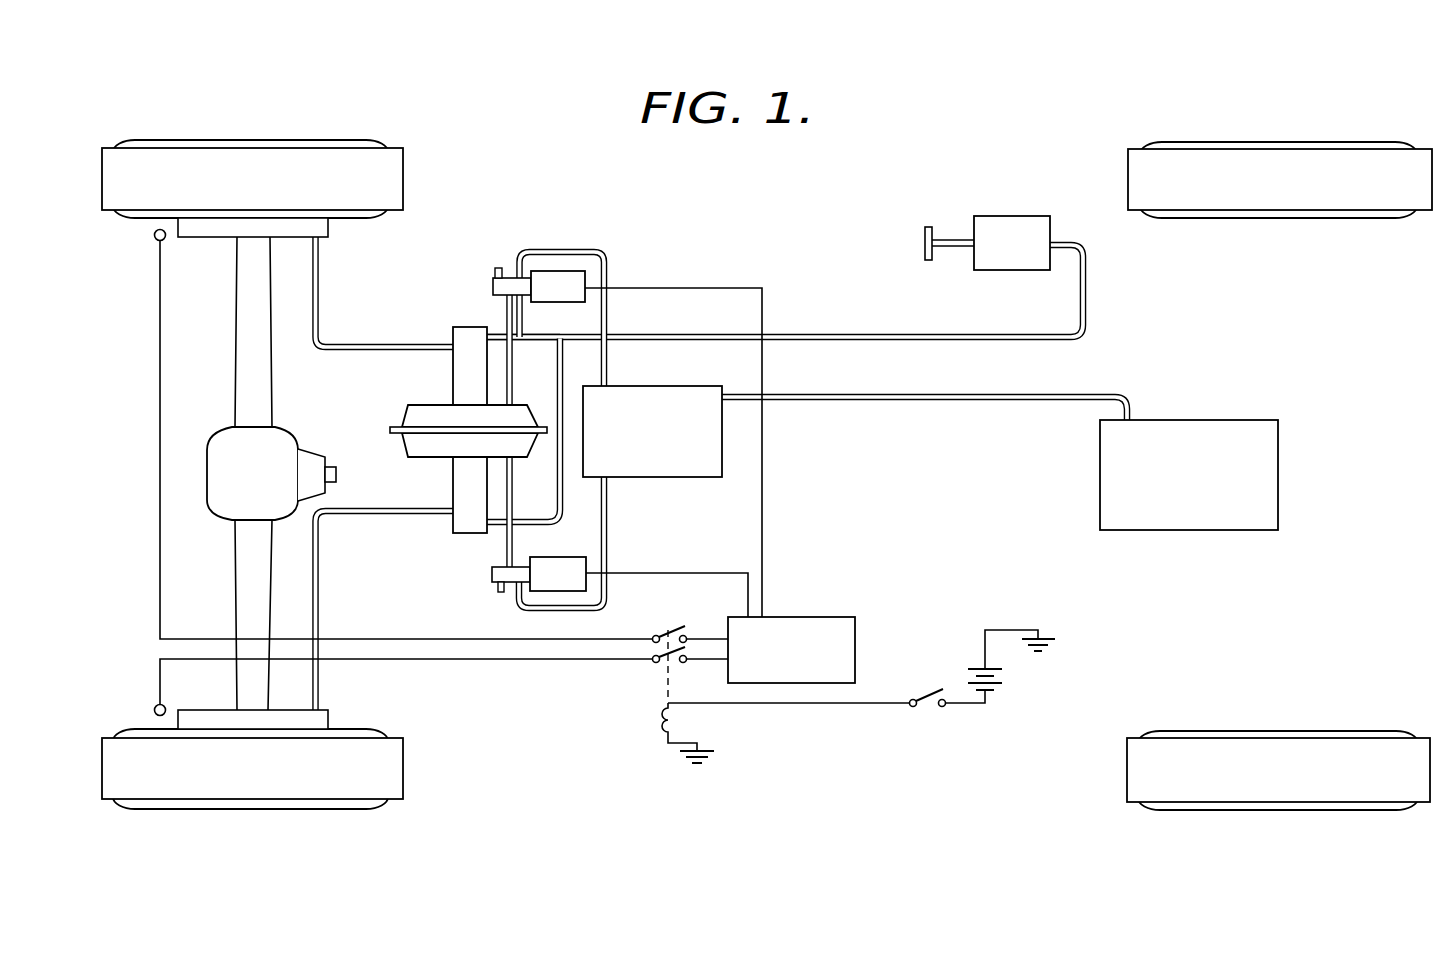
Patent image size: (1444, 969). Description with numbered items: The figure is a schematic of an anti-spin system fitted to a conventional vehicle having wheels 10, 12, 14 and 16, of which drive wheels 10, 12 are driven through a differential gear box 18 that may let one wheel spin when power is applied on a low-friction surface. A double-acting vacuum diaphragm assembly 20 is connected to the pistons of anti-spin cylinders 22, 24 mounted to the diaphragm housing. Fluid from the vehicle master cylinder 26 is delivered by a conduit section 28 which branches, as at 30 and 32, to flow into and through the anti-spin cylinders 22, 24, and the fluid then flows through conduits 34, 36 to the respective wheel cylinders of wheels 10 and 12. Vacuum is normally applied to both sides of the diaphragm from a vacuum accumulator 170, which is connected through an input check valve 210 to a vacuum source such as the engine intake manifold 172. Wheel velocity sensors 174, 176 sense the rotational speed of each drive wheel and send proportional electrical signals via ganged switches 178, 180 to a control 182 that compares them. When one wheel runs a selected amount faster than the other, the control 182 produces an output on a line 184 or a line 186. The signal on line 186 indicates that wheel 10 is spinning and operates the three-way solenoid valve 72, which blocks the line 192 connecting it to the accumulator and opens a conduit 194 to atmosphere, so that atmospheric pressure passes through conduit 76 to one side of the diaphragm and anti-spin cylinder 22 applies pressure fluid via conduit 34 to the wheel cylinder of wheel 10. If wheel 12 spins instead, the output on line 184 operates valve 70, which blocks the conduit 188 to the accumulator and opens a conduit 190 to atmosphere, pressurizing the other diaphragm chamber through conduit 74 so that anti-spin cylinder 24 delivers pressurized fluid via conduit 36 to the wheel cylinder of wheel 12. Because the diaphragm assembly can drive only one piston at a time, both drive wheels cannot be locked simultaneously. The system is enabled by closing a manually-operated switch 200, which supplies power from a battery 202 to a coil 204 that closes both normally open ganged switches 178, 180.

The drive wheel 10 is at (245, 150).
The drive wheel 12 is at (254, 798).
The wheel 14 is at (1220, 152).
The wheel 16 is at (1264, 798).
The differential gear box 18 is at (226, 445).
The double-acting vacuum diaphragm assembly 20 is at (408, 415).
The anti-spin cylinder 22 is at (453, 372).
The anti-spin cylinder 24 is at (453, 488).
The vehicle master cylinder 26 is at (1015, 216).
The conduit section 28 is at (703, 334).
The branch 30 is at (497, 528).
The branch 32 is at (522, 333).
The conduit 34 is at (320, 268).
The conduit 36 is at (320, 604).
The three-way solenoid valve 70 is at (563, 302).
The three-way solenoid valve 72 is at (565, 557).
The conduit 74 is at (514, 366).
The conduit 76 is at (514, 496).
The vacuum accumulator 170 is at (680, 386).
The intake manifold 172 is at (1100, 453).
The wheel velocity sensor 174 is at (155, 238).
The wheel velocity sensor 176 is at (155, 708).
The ganged switch 178 is at (660, 634).
The ganged switch 180 is at (655, 664).
The control 182 is at (812, 617).
The line 184 is at (764, 510).
The line 186 is at (710, 573).
The conduit 188 is at (572, 250).
The conduit 190 is at (495, 272).
The line 192 is at (578, 615).
The conduit 194 is at (498, 590).
The manually-operated switch 200 is at (920, 700).
The battery 202 is at (1005, 680).
The coil 204 is at (660, 721).
The input check valve 210 is at (1003, 394).